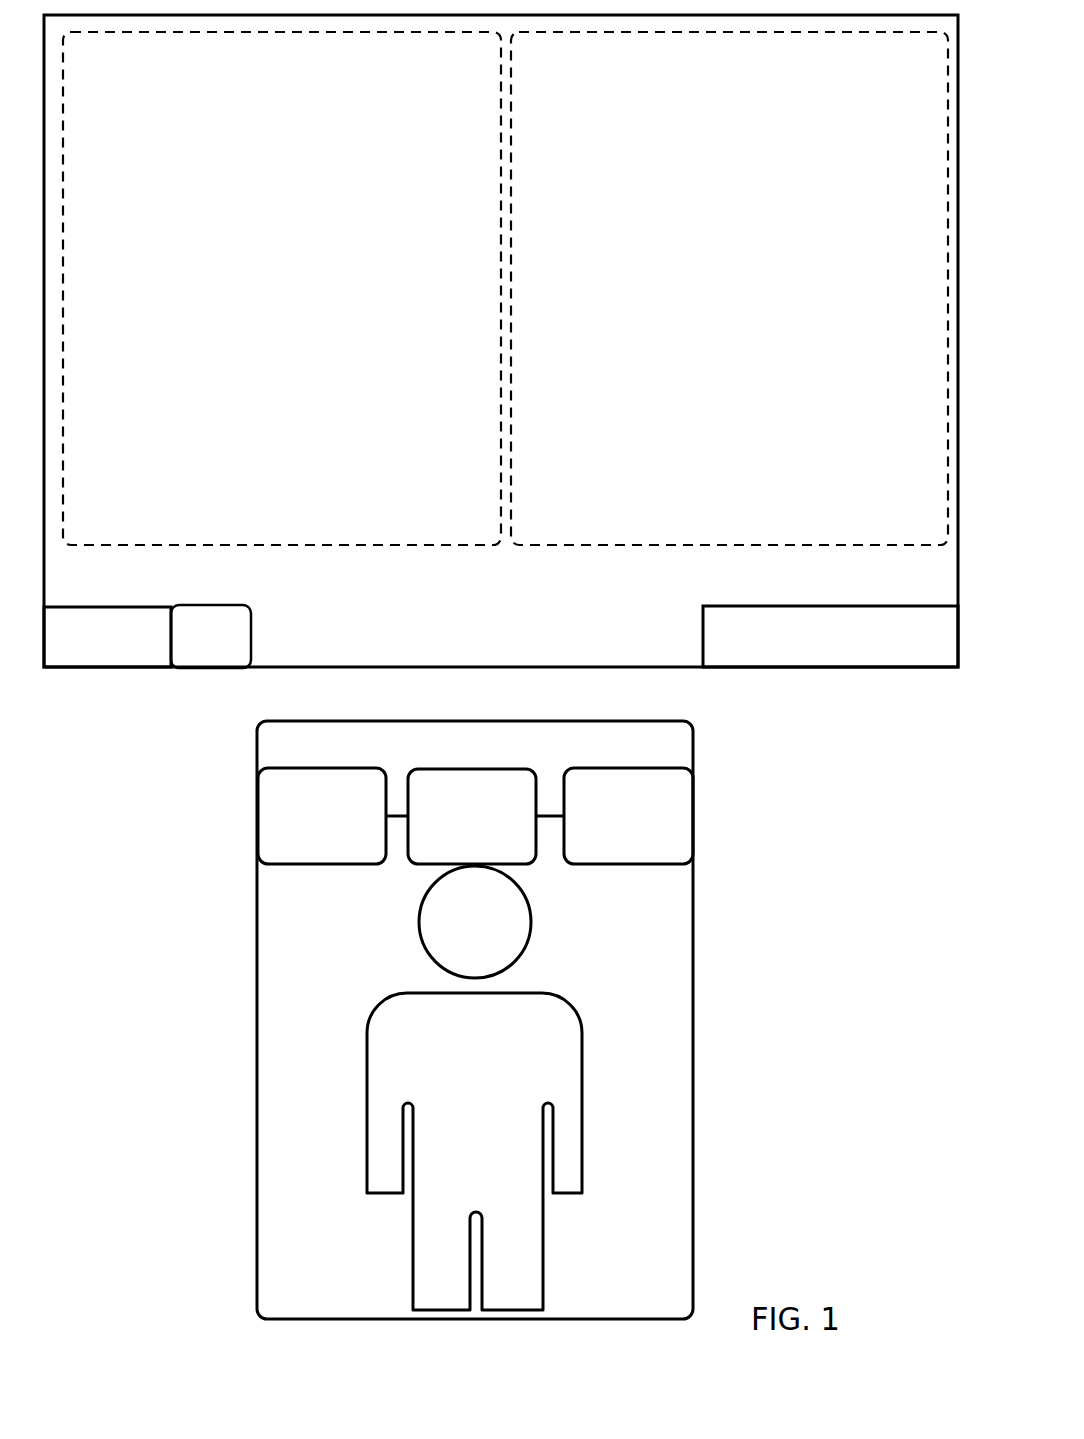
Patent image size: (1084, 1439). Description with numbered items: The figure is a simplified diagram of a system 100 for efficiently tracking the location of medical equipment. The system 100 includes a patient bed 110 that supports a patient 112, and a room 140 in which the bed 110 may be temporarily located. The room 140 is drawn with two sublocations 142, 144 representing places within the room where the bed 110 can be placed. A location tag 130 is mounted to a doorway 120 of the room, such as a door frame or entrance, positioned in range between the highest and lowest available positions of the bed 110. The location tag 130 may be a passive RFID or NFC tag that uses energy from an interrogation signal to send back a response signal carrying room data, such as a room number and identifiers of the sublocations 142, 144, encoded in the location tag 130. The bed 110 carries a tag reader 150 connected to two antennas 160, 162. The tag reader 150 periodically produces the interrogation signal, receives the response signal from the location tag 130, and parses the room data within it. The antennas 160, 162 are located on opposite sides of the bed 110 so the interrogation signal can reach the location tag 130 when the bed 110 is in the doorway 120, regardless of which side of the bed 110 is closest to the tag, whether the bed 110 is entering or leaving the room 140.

The system 100 is at (152, 1162).
The patient bed 110 is at (732, 734).
The patient 112 is at (559, 992).
The doorway 120 is at (271, 683).
The location tag 130 is at (211, 636).
The room 140 is at (501, 371).
The sublocation 142 is at (282, 288).
The sublocation 144 is at (729, 288).
The tag reader 150 is at (472, 816).
The antenna 160 is at (322, 816).
The antenna 162 is at (628, 816).